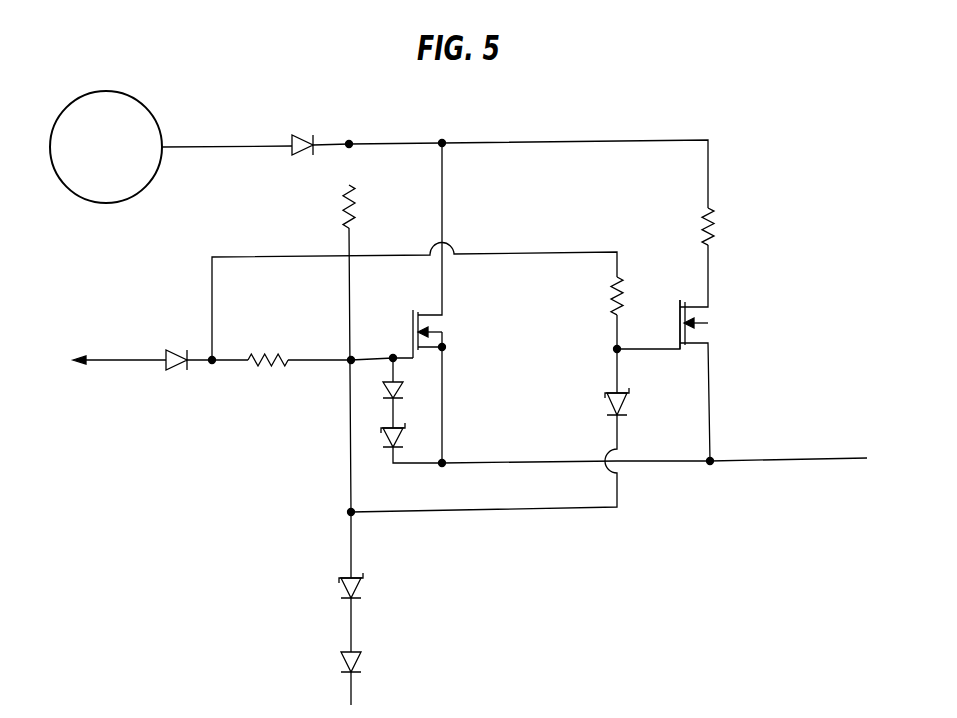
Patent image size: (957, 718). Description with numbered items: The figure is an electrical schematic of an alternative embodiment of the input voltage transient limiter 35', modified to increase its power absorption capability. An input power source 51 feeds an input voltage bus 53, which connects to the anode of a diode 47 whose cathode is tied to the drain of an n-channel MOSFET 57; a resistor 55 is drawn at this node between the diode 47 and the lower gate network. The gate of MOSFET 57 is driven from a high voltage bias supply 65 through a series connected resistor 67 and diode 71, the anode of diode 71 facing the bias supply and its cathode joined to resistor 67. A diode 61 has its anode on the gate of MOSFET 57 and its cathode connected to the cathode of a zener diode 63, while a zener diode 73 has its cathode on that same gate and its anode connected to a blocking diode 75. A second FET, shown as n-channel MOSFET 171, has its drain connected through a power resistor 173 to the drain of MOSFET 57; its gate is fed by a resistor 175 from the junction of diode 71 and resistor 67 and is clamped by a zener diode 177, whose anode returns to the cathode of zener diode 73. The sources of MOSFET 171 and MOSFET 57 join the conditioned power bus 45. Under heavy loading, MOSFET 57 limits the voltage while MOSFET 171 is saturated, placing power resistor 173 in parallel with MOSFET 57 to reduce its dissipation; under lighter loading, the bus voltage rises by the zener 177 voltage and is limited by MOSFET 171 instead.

The input power source 51 is at (106, 91).
The input voltage bus 53 is at (206, 146).
The diode 47 is at (302, 137).
The resistor 55 is at (355, 211).
The n-channel MOSFET 57 is at (448, 330).
The diode 61 is at (428, 384).
The zener diode 63 is at (424, 441).
The high voltage bias supply 65 is at (104, 359).
The resistor 67 is at (262, 368).
The diode 71 is at (170, 368).
The zener diode 73 is at (360, 597).
The blocking diode 75 is at (358, 650).
The n-channel MOSFET 171 is at (702, 318).
The power resistor 173 is at (716, 231).
The resistor 175 is at (628, 297).
The zener diode 177 is at (630, 410).
The conditioned power bus 45 is at (823, 458).
The input voltage transient limiter 35' is at (870, 343).